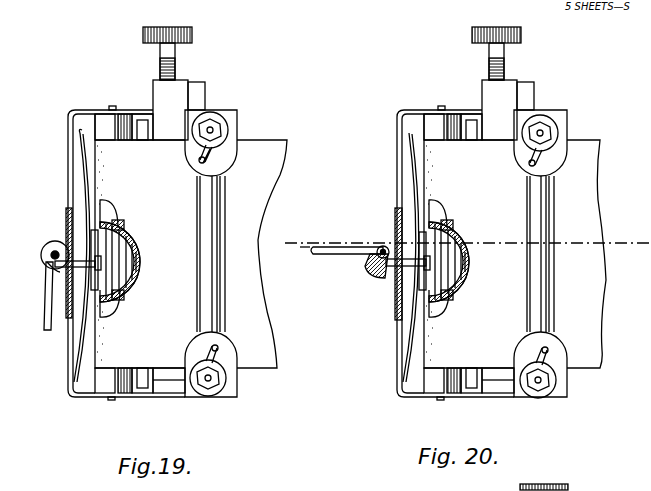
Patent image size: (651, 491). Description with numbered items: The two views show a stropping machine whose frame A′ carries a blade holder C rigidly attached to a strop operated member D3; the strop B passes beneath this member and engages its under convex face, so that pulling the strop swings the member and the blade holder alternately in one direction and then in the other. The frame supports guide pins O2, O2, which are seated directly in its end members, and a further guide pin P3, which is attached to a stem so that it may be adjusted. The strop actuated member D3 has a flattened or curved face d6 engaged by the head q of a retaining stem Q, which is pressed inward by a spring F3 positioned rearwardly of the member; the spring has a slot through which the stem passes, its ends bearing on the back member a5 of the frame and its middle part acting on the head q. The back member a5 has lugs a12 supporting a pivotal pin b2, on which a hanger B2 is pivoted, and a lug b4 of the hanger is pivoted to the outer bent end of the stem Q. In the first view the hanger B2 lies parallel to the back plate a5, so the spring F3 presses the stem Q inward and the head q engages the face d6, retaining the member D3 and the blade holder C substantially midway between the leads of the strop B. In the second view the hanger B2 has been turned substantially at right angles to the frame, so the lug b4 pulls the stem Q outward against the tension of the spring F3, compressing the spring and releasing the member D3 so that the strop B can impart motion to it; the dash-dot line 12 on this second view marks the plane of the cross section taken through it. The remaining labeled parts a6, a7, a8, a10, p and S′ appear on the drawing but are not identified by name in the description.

In FIG. 19, the frame / casing A′ is at (68, 165).
In FIG. 20, the frame / casing A′ is at (397, 342).
In FIG. 19, the back member of the frame a5 is at (70, 190).
In FIG. 20, the back member of the frame a5 is at (398, 362).
In FIG. 19, the upper guide bar a6 is at (141, 113).
In FIG. 20, the upper guide bar a6 is at (497, 110).
In FIG. 19, the lower guide bar a7 is at (145, 396).
In FIG. 20, the lower guide bar a7 is at (484, 396).
In FIG. 19, the bracket a8 is at (230, 146).
In FIG. 20, the bracket a8 is at (558, 154).
In FIG. 20, the rod a10 is at (408, 268).
In FIG. 19, the lugs a12 is at (60, 262).
In FIG. 19, the strop B is at (266, 352).
In FIG. 20, the strop B is at (594, 310).
In FIG. 19, the hanger B2 is at (46, 308).
In FIG. 20, the hanger B2 is at (372, 256).
In FIG. 19, the pivotal pin b2 is at (48, 249).
In FIG. 20, the pivotal pin b2 is at (381, 246).
In FIG. 19, the lug of the hanger b4 is at (46, 290).
In FIG. 20, the lug of the hanger b4 is at (380, 270).
In FIG. 19, the blade holder C is at (164, 94).
In FIG. 20, the blade holder C is at (481, 98).
In FIG. 19, the strop operated member D3 is at (112, 270).
In FIG. 20, the strop operated member D3 is at (430, 126).
In FIG. 19, the flattened or curved face d6 is at (102, 244).
In FIG. 20, the flattened or curved face d6 is at (436, 270).
In FIG. 19, the spring F3 is at (80, 328).
In FIG. 20, the spring F3 is at (414, 316).
In FIG. 19, the guide pins O2 is at (114, 128).
In FIG. 20, the guide pins O2 is at (440, 212).
In FIG. 19, the guide pin P3 is at (216, 302).
In FIG. 20, the guide pin P3 is at (553, 314).
In FIG. 19, the screw p is at (212, 128).
In FIG. 20, the screw p is at (546, 132).
In FIG. 19, the retaining stem Q is at (92, 233).
In FIG. 20, the retaining stem Q is at (420, 282).
In FIG. 19, the head of the retaining stem q is at (99, 266).
In FIG. 20, the head of the retaining stem q is at (431, 263).
In FIG. 19, the adjusting screw S′ is at (176, 60).
In FIG. 20, the adjusting screw S′ is at (505, 66).
In FIG. 20, the section line 12— 12 is at (299, 241).